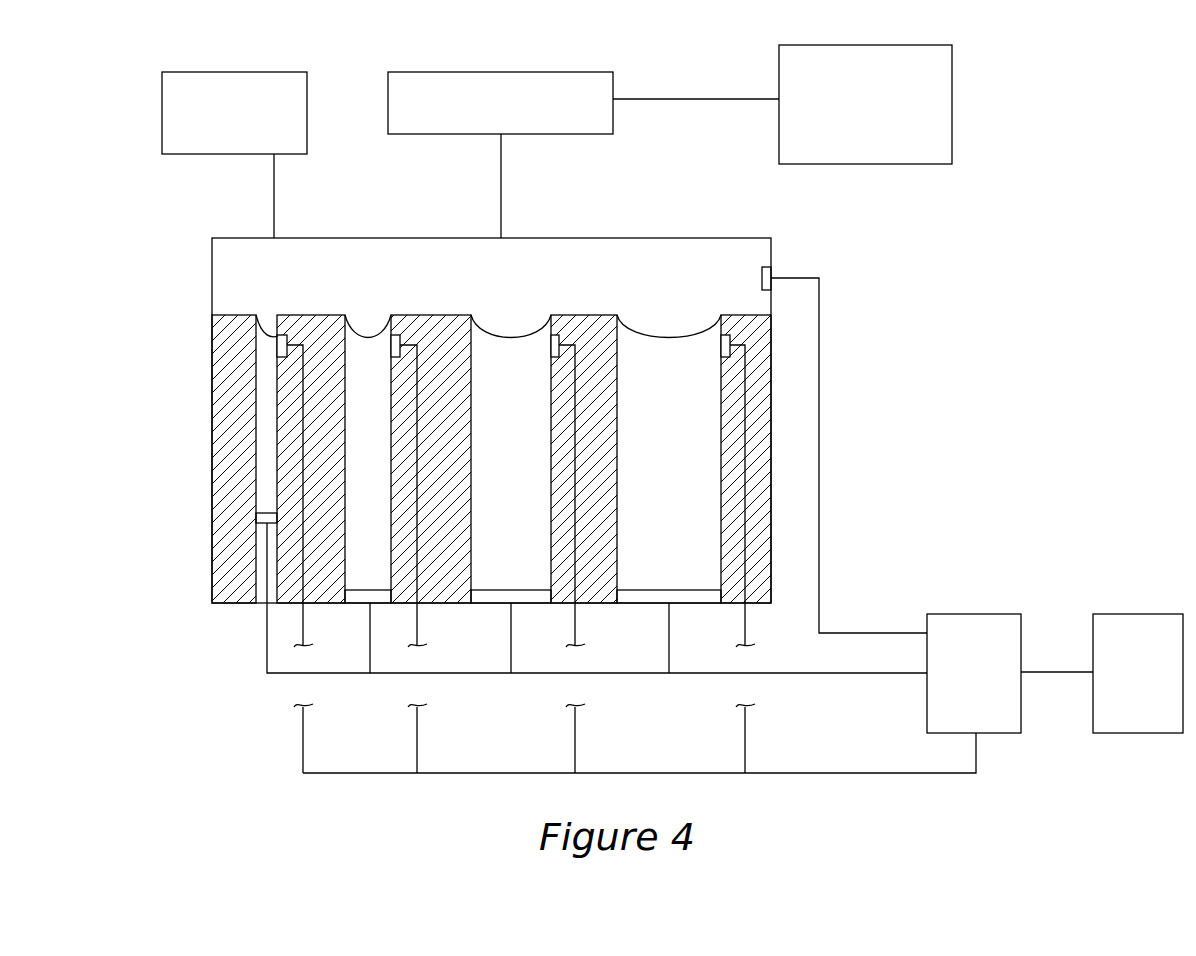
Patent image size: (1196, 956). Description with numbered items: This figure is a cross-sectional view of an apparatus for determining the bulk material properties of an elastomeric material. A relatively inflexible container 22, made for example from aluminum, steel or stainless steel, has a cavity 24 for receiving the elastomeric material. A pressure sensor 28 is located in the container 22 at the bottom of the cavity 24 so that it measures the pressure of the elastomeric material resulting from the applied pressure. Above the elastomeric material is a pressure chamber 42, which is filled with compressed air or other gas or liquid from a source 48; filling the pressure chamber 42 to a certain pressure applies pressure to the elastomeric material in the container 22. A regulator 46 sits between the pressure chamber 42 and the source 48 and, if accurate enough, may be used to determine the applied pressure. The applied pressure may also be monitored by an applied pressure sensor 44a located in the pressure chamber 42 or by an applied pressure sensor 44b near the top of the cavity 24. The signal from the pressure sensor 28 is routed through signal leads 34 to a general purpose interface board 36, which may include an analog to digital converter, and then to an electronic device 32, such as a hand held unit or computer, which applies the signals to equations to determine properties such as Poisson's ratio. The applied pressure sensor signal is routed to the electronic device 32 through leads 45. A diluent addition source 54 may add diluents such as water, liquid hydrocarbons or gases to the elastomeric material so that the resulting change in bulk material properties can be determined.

The container 22 is at (202, 373).
The cavity 24 is at (262, 432).
The pressure sensor 28 is at (262, 520).
The electronic device 32 is at (1127, 614).
The signal leads 34 is at (267, 660).
The general purpose interface board 36 is at (967, 614).
The pressure chamber 42 is at (348, 248).
The applied pressure sensor 44a is at (772, 276).
The applied pressure sensor 44b is at (283, 340).
The leads 45 is at (819, 465).
The regulator 46 is at (487, 72).
The source 48 is at (852, 45).
The diluent addition source 54 is at (225, 72).